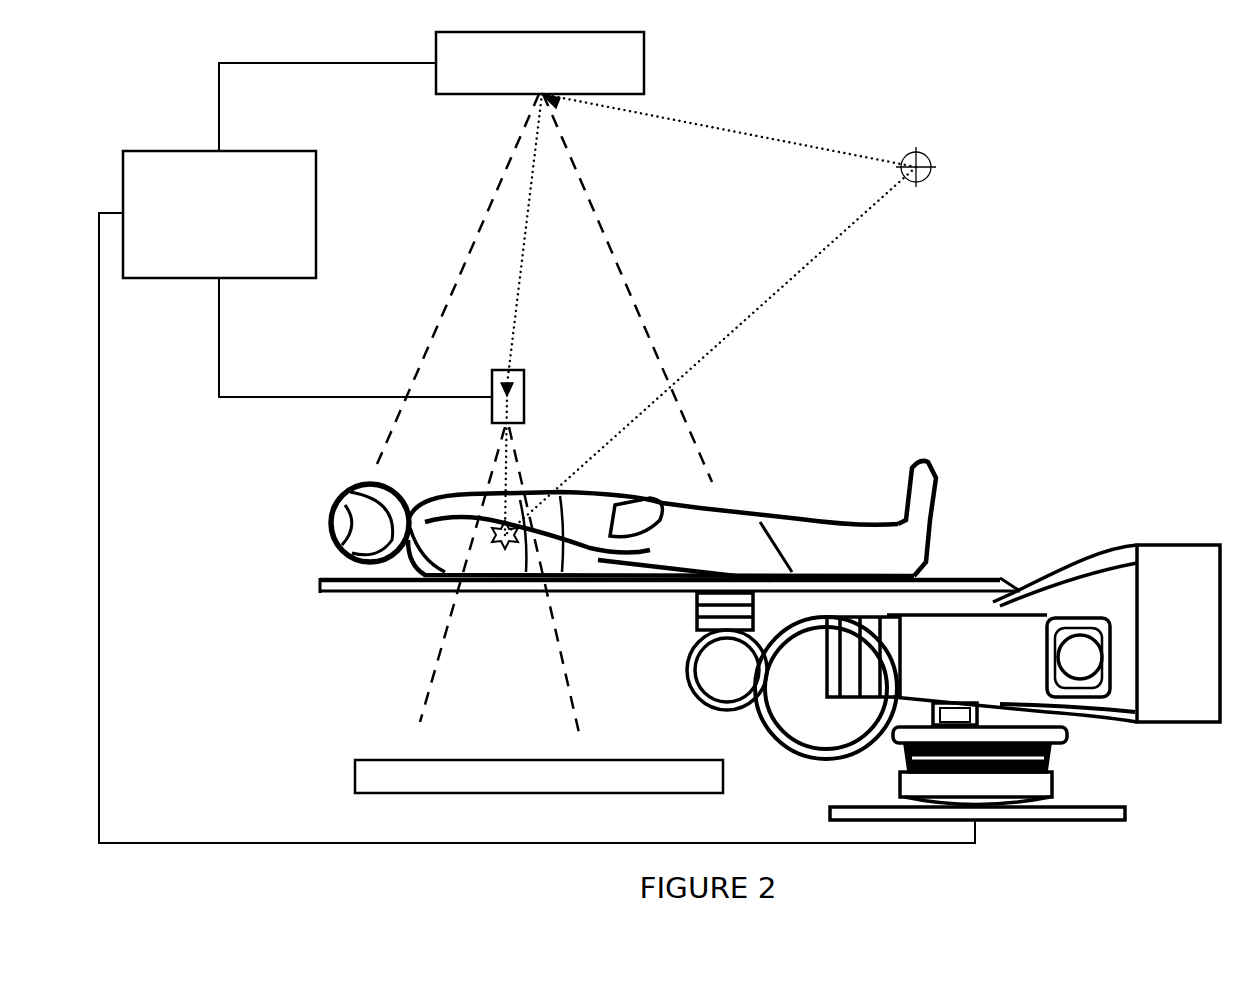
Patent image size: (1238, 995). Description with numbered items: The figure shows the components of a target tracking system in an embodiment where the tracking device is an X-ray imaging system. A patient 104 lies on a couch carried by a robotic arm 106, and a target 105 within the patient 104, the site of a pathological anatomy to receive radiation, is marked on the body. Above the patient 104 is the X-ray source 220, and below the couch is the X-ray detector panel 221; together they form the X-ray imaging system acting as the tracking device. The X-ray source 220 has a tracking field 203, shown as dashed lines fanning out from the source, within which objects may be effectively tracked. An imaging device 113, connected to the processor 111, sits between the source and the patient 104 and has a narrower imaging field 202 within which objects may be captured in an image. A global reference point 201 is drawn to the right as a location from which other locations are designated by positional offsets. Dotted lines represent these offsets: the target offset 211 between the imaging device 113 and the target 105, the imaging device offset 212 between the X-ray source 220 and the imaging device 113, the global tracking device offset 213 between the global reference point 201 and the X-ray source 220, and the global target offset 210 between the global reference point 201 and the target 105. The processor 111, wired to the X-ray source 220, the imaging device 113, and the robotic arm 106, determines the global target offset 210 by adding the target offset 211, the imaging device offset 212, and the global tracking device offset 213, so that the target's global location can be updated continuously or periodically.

The processor 111 is at (219, 214).
The X-ray source 220 is at (540, 63).
The X-ray detector panel 221 is at (539, 776).
The tracking field 203 is at (480, 227).
The imaging field 202 is at (440, 650).
The global tracking device offset 213 is at (662, 118).
The global target offset 210 is at (745, 324).
The imaging device offset 212 is at (528, 256).
The target offset 211 is at (498, 467).
The global reference point 201 is at (956, 168).
The imaging device 113 is at (527, 397).
The target 105 is at (503, 553).
The patient 104 is at (950, 453).
The robotic arm 106 is at (1168, 522).